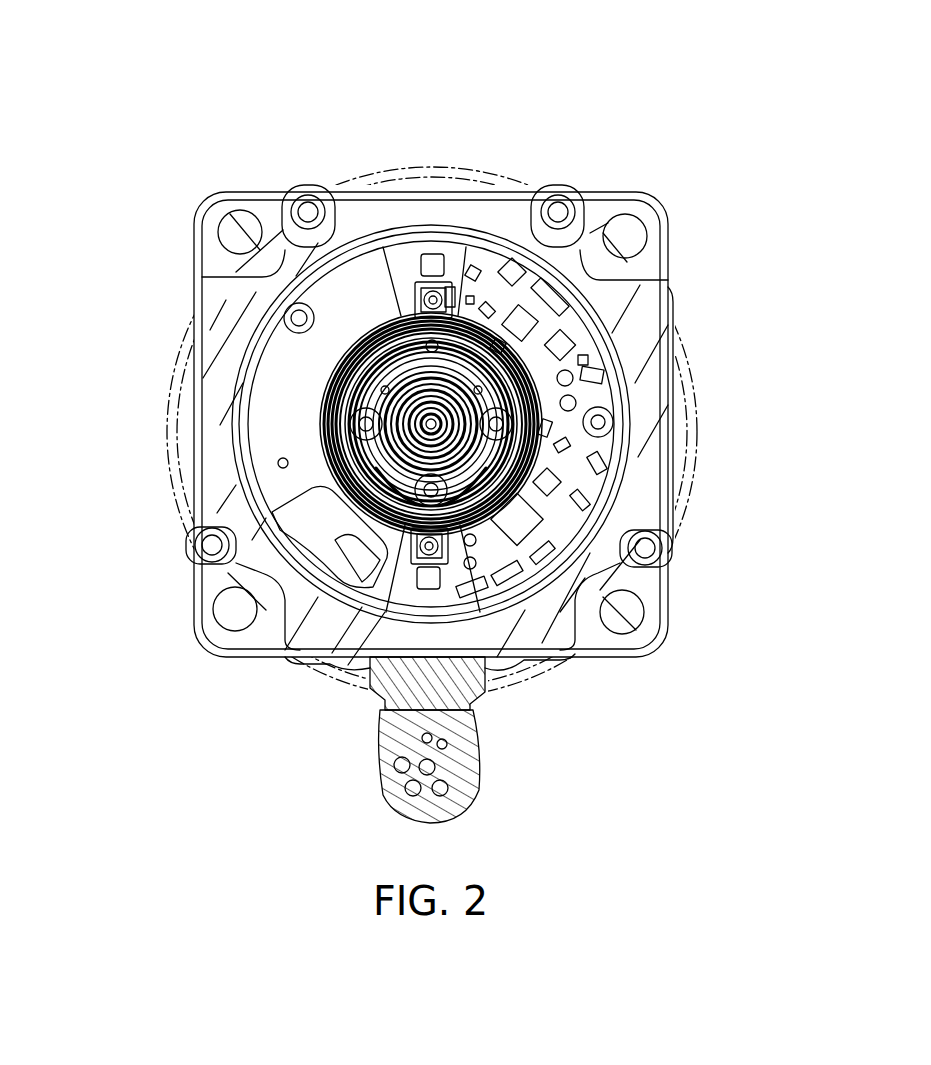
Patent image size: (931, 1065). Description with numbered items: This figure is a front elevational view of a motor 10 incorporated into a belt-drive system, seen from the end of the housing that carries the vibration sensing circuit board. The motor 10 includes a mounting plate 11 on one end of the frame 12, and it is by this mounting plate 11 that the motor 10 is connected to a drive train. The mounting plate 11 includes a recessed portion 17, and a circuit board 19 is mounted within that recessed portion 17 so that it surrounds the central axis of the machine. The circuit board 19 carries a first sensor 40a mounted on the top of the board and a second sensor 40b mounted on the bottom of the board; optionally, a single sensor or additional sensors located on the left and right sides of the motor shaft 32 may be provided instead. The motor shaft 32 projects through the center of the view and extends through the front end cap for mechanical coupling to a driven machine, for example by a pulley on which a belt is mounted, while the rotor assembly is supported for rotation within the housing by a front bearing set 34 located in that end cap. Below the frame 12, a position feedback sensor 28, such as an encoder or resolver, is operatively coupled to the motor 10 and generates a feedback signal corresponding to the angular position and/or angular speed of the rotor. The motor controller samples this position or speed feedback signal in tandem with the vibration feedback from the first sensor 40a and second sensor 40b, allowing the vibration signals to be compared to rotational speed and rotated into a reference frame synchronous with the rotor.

The motor 10 is at (670, 82).
The mounting plate 11 is at (646, 200).
The frame 12 is at (257, 186).
The recessed portion 17 is at (335, 197).
The circuit board 19 is at (358, 331).
The position feedback sensor 28 is at (472, 768).
The motor shaft 32 is at (330, 395).
The front bearing set 34 is at (345, 473).
The first sensor 40a is at (468, 248).
The second sensor 40b is at (393, 548).